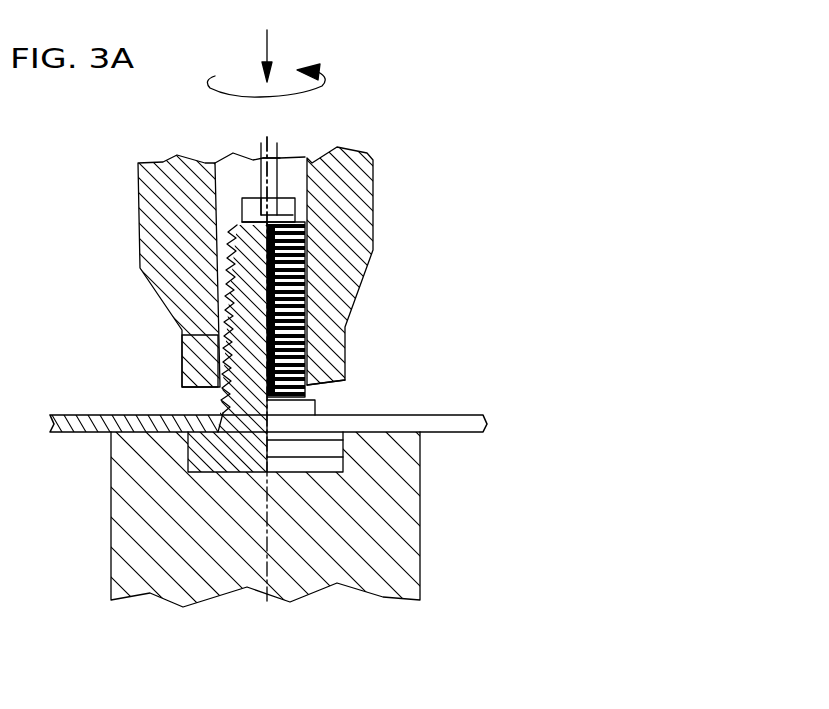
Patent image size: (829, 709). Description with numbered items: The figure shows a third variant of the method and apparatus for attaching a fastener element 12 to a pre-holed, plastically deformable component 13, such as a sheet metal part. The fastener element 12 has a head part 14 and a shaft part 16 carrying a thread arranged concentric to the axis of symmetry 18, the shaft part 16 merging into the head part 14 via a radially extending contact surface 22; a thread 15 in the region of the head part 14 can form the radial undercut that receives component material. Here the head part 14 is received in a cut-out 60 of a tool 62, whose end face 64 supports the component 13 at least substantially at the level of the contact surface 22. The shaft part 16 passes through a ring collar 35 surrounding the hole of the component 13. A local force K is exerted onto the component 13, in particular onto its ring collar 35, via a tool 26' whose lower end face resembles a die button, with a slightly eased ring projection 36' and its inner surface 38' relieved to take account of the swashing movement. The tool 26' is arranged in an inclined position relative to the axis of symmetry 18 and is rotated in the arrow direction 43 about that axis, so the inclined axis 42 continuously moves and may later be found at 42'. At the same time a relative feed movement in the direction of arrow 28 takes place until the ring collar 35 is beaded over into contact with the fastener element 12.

The arrow 28 is at (265, 40).
The arrow direction 43 is at (323, 86).
The axis of symmetry 18 is at (265, 140).
The inclined axis 42 is at (207, 170).
The inclined axis at a later point in time 42' is at (313, 126).
The shaft part 16 is at (300, 200).
The tool 26' is at (338, 266).
The thread 15 is at (233, 257).
The local force K is at (212, 350).
The ring collar 35 is at (218, 408).
The inner surface of the ring projection 38' is at (360, 352).
The ring projection 36' is at (256, 347).
The head part 14 is at (327, 453).
The component 13 is at (450, 423).
The fastener element 12 is at (317, 475).
The tool 62 is at (408, 561).
The end face 64 is at (140, 436).
The contact surface 22 is at (117, 472).
The cut-out 60 is at (223, 473).